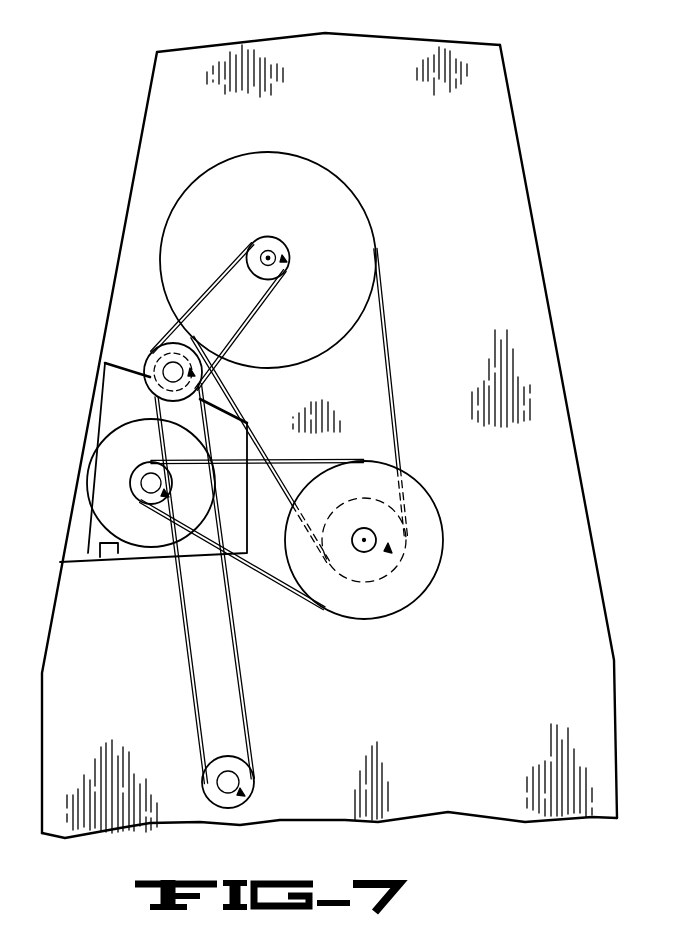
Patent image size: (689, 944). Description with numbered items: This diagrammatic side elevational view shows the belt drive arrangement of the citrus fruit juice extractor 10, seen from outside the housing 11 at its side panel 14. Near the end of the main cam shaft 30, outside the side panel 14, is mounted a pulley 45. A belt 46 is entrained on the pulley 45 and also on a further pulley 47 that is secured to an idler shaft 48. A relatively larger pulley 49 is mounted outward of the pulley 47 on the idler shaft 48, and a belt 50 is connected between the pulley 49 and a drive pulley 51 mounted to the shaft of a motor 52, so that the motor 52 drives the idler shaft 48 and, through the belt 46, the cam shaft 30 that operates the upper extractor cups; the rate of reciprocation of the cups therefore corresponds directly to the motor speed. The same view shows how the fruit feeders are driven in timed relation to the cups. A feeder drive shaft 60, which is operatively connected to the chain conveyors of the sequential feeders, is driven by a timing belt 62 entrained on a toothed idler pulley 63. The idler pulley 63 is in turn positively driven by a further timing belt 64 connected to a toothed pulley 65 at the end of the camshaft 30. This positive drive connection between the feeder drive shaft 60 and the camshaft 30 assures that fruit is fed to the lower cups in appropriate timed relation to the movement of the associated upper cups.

The citrus fruit juice extractor 10 is at (540, 73).
The housing 11 is at (604, 580).
The side panel 14 is at (438, 719).
The cam shaft 30 is at (262, 256).
The pulley 45 is at (368, 262).
The belt 46 is at (381, 291).
The further pulley 47 is at (404, 484).
The idler shaft 48 is at (366, 553).
The relatively larger pulley 49 is at (430, 514).
The belt 50 is at (274, 584).
The drive pulley 51 is at (137, 494).
The motor 52 is at (95, 472).
The feeder drive shaft 60 is at (216, 783).
The timing belt 62 is at (239, 647).
The toothed idler pulley 63 is at (146, 383).
The further timing belt 64 is at (229, 268).
The toothed pulley 65 is at (268, 247).